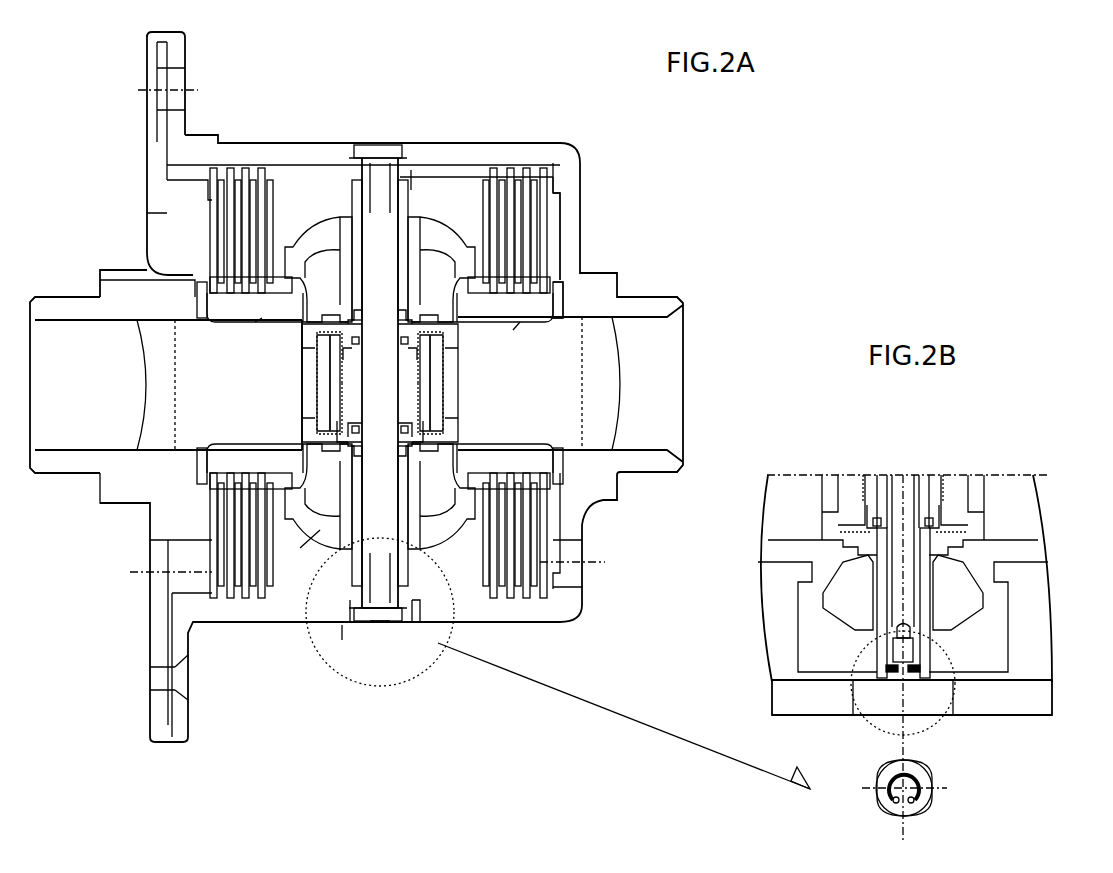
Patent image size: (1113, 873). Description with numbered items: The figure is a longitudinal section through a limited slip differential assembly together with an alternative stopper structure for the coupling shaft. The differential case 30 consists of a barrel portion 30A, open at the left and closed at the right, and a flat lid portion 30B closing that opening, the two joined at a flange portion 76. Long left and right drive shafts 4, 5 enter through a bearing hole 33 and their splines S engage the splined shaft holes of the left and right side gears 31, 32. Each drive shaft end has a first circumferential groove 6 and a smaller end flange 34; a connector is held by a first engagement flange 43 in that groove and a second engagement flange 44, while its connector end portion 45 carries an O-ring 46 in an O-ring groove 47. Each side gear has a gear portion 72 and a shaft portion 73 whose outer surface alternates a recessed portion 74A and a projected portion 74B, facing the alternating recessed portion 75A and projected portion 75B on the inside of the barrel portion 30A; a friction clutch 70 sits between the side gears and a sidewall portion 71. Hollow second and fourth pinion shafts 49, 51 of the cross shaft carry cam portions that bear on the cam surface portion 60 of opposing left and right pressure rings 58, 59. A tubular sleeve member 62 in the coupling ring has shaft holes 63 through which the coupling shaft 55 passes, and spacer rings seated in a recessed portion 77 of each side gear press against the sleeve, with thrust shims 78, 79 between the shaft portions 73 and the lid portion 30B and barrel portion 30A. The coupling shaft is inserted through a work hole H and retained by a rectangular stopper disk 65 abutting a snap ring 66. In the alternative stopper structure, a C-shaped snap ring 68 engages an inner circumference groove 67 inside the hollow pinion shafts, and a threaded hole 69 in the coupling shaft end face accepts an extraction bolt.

In FIG. 2A, the drive shaft 4 is at (160, 430).
In FIG. 2A, the drive shaft 5 is at (660, 420).
In FIG. 2A, the first circumferential groove 6 is at (302, 350).
In FIG. 2A, the differential case 30 is at (592, 151).
In FIG. 2A, the barrel portion 30A is at (298, 135).
In FIG. 2A, the lid portion 30B is at (158, 172).
In FIG. 2A, the left side gear 31 is at (288, 552).
In FIG. 2B, the left side gear 31 is at (808, 524).
In FIG. 2A, the right side gear 32 is at (468, 552).
In FIG. 2B, the right side gear 32 is at (1002, 530).
In FIG. 2A, the bearing hole 33 is at (70, 297).
In FIG. 2A, the end flange 34 is at (320, 383).
In FIG. 2A, the first engagement flange 43 is at (303, 430).
In FIG. 2A, the second engagement flange 44 is at (337, 413).
In FIG. 2A, the connector end portion 45 is at (356, 350).
In FIG. 2A, the O-ring 46 is at (350, 437).
In FIG. 2B, the O-ring 46 is at (877, 518).
In FIG. 2A, the O-ring groove 47 is at (310, 358).
In FIG. 2A, the second pinion shaft 49 is at (352, 192).
In FIG. 2A, the fourth pinion shaft 51 is at (350, 608).
In FIG. 2B, the fourth pinion shaft 51 is at (925, 655).
In FIG. 2B, the coupling shaft 55 is at (880, 785).
In FIG. 2A, the left pressure ring 58 is at (300, 550).
In FIG. 2B, the left pressure ring 58 is at (818, 641).
In FIG. 2A, the right pressure ring 59 is at (420, 640).
In FIG. 2B, the right pressure ring 59 is at (983, 653).
In FIG. 2A, the cam surface portion 60 is at (383, 195).
In FIG. 2A, the sleeve member 62 is at (447, 565).
In FIG. 2A, the shaft hole 63 is at (322, 565).
In FIG. 2A, the stopper disk 65 is at (395, 625).
In FIG. 2B, the stopper disk 65 is at (873, 700).
In FIG. 2A, the snap ring 66 is at (358, 145).
In FIG. 2B, the inner circumference groove 67 is at (915, 662).
In FIG. 2B, the C-shaped snap ring 68 is at (907, 672).
In FIG. 2B, the threaded hole 69 is at (885, 657).
In FIG. 2A, the friction clutch 70 is at (394, 341).
In FIG. 2A, the sidewall portion 71 is at (562, 215).
In FIG. 2A, the gear portion 72 is at (316, 317).
In FIG. 2A, the shaft portion 73 is at (277, 317).
In FIG. 2A, the recessed portion 74A is at (565, 300).
In FIG. 2A, the projected portion 74B is at (556, 290).
In FIG. 2A, the recessed portion 75A is at (498, 180).
In FIG. 2A, the projected portion 75B is at (533, 185).
In FIG. 2A, the flange portion 76 is at (185, 58).
In FIG. 2A, the recessed portion 77 is at (322, 300).
In FIG. 2A, the thrust bearing member (shim) 78 is at (175, 278).
In FIG. 2A, the thrust bearing member (shim) 79 is at (562, 300).
In FIG. 2A, the work hole H is at (411, 170).
In FIG. 2A, the splines S is at (255, 322).